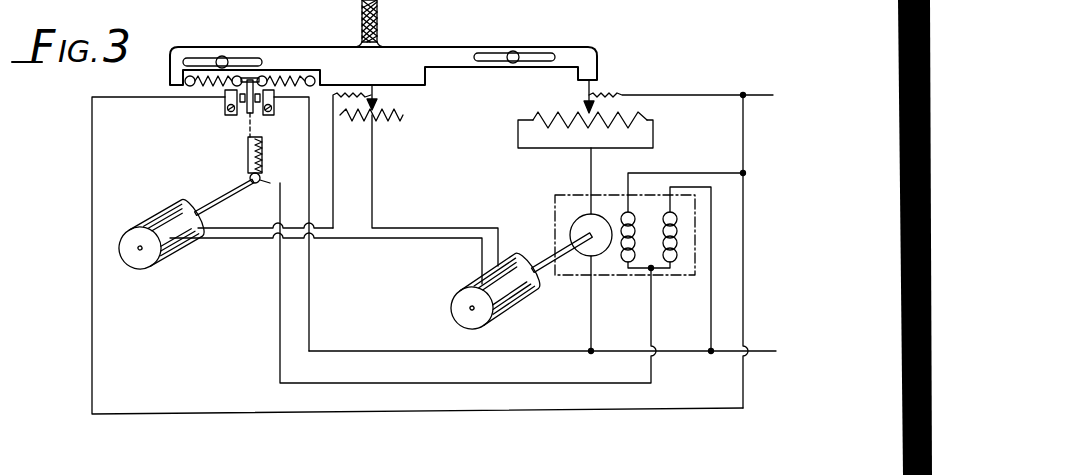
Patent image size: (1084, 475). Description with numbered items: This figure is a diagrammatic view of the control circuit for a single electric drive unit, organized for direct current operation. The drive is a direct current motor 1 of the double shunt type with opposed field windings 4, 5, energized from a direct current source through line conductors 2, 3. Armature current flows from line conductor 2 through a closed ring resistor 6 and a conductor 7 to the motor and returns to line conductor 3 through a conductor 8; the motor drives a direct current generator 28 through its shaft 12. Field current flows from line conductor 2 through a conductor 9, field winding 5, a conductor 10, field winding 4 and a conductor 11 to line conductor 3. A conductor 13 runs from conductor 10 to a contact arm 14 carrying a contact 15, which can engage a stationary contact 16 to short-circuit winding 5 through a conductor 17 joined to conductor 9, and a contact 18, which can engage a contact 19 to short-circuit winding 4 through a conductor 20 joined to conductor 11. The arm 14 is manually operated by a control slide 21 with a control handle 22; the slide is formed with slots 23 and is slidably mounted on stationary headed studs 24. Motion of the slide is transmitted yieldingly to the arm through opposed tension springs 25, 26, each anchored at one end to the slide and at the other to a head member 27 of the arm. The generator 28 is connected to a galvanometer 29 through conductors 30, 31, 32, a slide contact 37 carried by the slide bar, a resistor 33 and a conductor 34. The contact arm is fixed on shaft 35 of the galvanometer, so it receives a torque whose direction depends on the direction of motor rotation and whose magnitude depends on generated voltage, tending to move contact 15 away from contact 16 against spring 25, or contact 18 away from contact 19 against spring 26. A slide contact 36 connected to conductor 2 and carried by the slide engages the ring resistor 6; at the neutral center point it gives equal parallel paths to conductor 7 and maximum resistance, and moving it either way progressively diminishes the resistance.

The direct current motor 1 is at (553, 207).
The line conductor 2 is at (745, 93).
The line conductor 3 is at (764, 352).
The field winding 4 is at (664, 216).
The field winding 5 is at (625, 206).
The closed ring resistor 6 is at (532, 118).
The conductor 7 is at (590, 166).
The conductor 8 is at (593, 312).
The conductor 9 is at (742, 128).
The conductor 10 is at (641, 264).
The conductor 11 is at (742, 171).
The motor shaft 12 is at (546, 257).
The conductor 13 is at (653, 312).
The contact arm 14 is at (247, 153).
The contact 15 is at (246, 108).
The stationary contact 16 is at (227, 106).
The conductor 17 is at (444, 412).
The contact 18 is at (256, 108).
The contact 19 is at (275, 102).
The conductor 20 is at (312, 298).
The control slide 21 is at (412, 48).
The control handle 22 is at (378, 14).
The slot 23 is at (192, 58).
The stationary headed stud 24 is at (222, 56).
The tension spring 25 is at (190, 89).
The tension spring 26 is at (288, 72).
The head member 27 is at (251, 78).
The direct current generator 28 is at (514, 298).
The galvanometer 29 is at (159, 213).
The conductor 30 is at (377, 240).
The conductor 31 is at (253, 228).
The conductor 32 is at (338, 166).
The resistor 33 is at (394, 121).
The conductor 34 is at (378, 191).
The shaft 35 is at (217, 196).
The slide contact 36 is at (588, 99).
The slide contact 37 is at (378, 105).